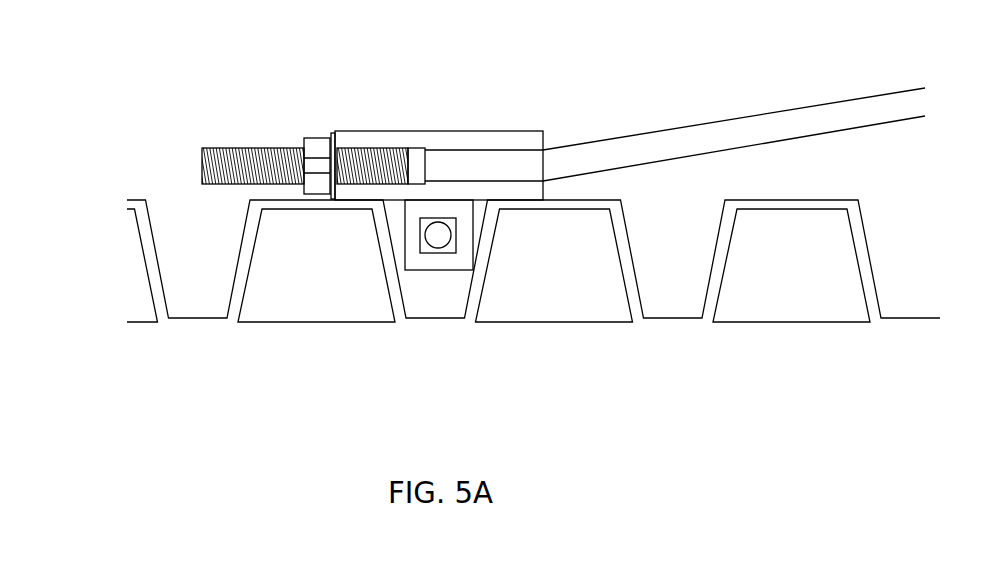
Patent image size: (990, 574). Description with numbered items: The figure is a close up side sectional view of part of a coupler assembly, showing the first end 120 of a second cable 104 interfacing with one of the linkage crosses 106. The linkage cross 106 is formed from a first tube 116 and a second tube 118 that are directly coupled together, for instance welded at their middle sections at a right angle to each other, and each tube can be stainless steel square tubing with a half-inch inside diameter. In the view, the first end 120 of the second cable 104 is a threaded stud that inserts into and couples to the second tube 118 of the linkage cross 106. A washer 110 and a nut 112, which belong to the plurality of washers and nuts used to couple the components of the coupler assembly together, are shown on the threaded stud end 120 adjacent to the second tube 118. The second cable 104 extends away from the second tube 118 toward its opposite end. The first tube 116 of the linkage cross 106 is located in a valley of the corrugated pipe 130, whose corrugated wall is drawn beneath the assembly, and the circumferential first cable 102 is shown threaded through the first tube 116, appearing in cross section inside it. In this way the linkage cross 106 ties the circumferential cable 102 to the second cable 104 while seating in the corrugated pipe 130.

The first cable 102 is at (447, 245).
The second cable 104 is at (790, 110).
The linkage cross 106 is at (528, 109).
The washer 110 is at (333, 133).
The nut 112 is at (317, 138).
The first tube 116 is at (428, 270).
The second tube 118 is at (448, 131).
The first end 120 is at (214, 148).
The corrugated pipe 130 is at (285, 322).